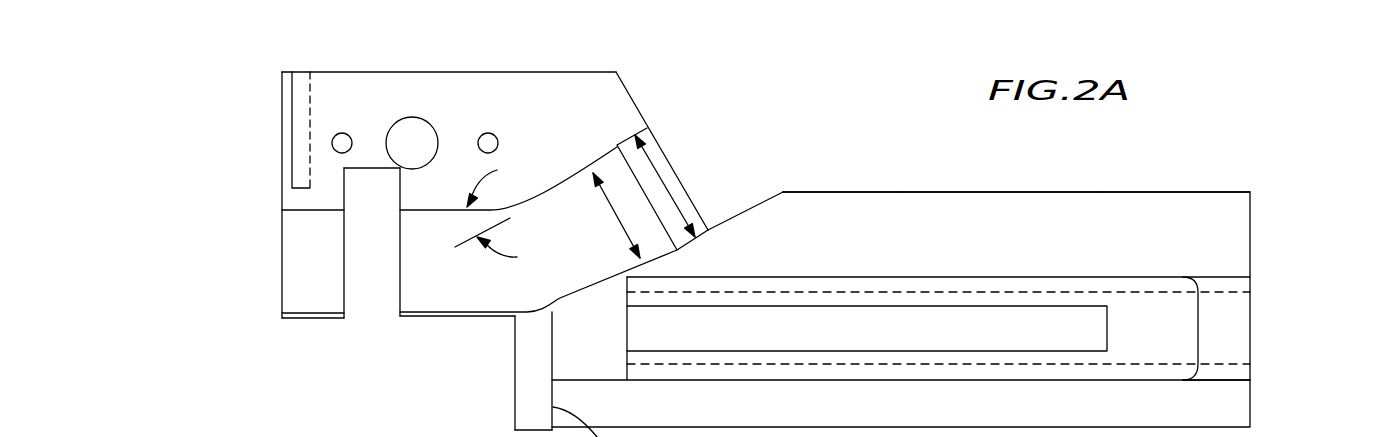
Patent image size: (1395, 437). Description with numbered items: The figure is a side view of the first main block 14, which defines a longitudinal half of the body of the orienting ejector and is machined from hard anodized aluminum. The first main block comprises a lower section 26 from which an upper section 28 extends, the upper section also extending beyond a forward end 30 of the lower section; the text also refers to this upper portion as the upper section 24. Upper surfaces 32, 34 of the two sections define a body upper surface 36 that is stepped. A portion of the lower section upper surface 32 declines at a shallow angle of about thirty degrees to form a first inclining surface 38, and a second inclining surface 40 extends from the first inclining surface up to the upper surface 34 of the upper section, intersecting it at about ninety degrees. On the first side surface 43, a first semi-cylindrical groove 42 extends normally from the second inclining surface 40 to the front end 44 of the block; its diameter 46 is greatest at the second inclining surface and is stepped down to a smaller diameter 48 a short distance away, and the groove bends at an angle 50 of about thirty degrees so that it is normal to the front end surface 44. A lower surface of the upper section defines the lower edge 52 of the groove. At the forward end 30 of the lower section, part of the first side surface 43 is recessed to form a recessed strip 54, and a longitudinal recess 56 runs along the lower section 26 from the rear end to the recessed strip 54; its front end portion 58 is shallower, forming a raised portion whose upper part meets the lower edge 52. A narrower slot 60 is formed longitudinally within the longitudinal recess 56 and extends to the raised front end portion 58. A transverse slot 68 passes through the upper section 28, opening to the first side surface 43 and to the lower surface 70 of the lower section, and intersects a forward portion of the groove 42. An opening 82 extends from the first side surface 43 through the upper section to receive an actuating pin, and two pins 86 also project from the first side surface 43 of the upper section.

The first main block 14 is at (1258, 226).
The front end portion 24 is at (457, 138).
The lower section 26 is at (1173, 198).
The upper section 28 is at (372, 130).
The forward end 30 is at (515, 355).
The upper surface of the lower section 32 is at (915, 192).
The upper surface of the upper section 34 is at (337, 72).
The body upper surface 36 is at (807, 192).
The first inclining surface 38 is at (747, 210).
The second inclining surface 40 is at (640, 100).
The first semi-cylindrical groove 42 is at (423, 283).
The first side surface 43 is at (363, 155).
The front end 44 is at (282, 200).
The diameter 46 is at (657, 173).
The smaller diameter 48 is at (613, 218).
The angle 50 is at (517, 257).
The lower edge 52 is at (447, 315).
The recessed strip 54 is at (537, 402).
The longitudinal recess 56 is at (1170, 328).
The front end portion of the longitudinal recess 58 is at (593, 350).
The slot 60 is at (992, 315).
The transverse slot 68 is at (357, 297).
The lower surface 70 is at (302, 318).
The opening 82 is at (417, 133).
The pins 86 is at (497, 137).